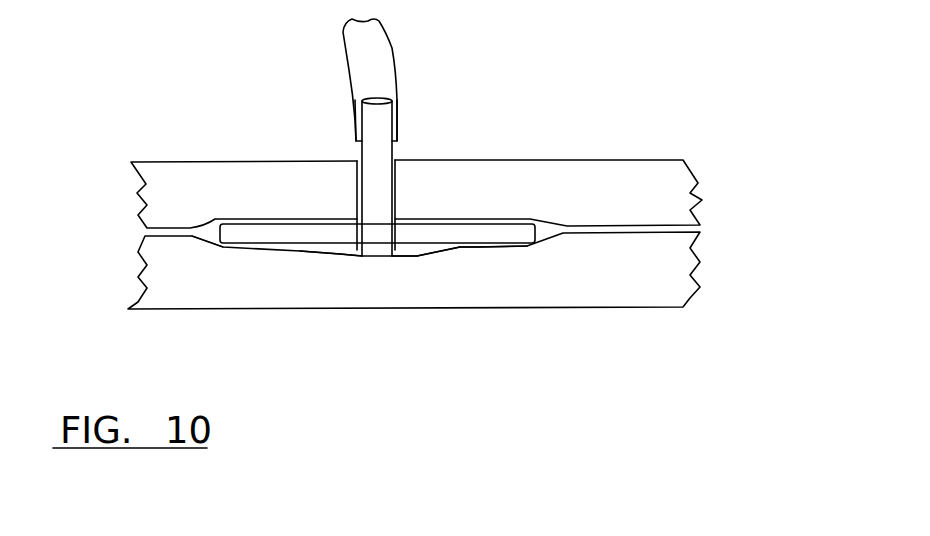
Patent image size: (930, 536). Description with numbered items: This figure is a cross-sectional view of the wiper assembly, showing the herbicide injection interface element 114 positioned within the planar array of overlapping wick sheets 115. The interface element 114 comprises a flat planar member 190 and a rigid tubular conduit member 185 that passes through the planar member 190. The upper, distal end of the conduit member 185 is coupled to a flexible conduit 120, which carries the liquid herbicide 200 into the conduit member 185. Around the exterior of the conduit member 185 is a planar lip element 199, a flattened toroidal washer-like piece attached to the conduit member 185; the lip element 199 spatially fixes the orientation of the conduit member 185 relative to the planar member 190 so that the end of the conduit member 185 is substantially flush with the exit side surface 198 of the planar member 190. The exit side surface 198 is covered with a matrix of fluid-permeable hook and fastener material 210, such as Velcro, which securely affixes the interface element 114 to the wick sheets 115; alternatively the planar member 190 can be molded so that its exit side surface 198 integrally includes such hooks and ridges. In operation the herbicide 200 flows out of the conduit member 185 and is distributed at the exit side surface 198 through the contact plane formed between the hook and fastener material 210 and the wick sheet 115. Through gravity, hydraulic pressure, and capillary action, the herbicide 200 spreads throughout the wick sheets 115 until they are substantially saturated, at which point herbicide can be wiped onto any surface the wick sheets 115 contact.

The wick sheets 115 is at (677, 200).
The flat planar member 190 is at (300, 228).
The flexible conduit 120 is at (346, 57).
The herbicide 200 is at (375, 62).
The conduit member 185 is at (395, 178).
The exit side surface 198 is at (245, 248).
The herbicide injection interface element 114 is at (347, 250).
The planar lip element 199 is at (407, 247).
The fluid-permeable hook and fastener material 210 is at (475, 247).